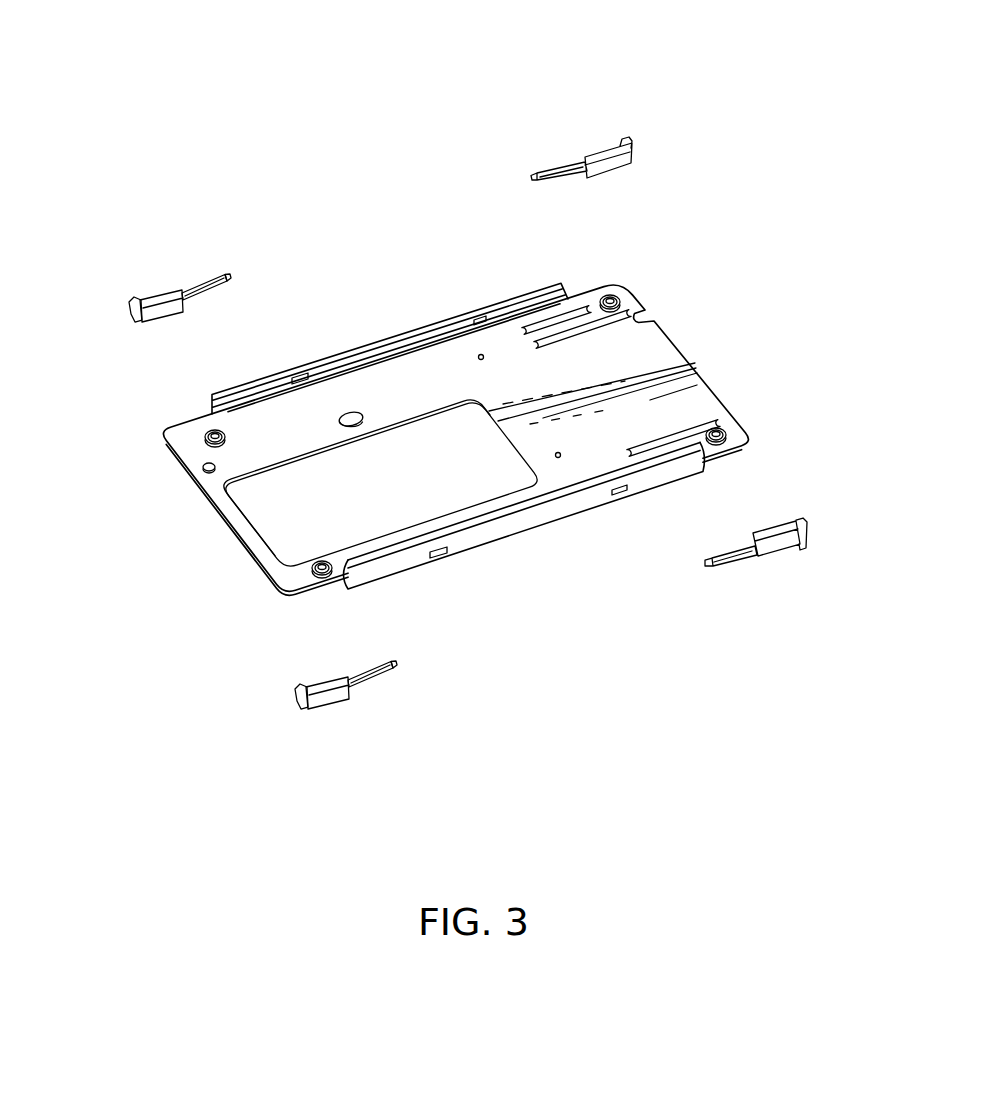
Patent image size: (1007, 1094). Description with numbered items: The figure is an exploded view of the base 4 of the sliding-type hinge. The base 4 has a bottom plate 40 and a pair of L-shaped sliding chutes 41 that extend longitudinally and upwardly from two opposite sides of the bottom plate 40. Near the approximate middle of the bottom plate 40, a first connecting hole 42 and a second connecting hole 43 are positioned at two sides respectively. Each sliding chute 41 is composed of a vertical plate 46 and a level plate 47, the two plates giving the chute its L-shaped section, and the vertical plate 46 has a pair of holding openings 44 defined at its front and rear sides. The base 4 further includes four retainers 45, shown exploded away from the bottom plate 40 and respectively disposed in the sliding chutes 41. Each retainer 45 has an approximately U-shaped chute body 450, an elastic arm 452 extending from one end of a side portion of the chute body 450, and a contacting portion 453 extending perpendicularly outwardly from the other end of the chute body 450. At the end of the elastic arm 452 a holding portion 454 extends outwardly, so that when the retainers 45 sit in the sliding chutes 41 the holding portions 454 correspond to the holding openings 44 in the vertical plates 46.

The base 4 is at (190, 54).
The bottom plate 40 is at (650, 357).
The sliding chute 41 is at (211, 402).
The first connecting hole 42 is at (479, 356).
The second connecting hole 43 is at (558, 458).
The holding opening 44 is at (301, 378).
The retainer 45 is at (417, 417).
The chute body 450 is at (140, 320).
The elastic arm 452 is at (210, 291).
The contacting portion 453 is at (130, 308).
The holding portion 454 is at (372, 465).
The vertical plate 46 is at (524, 520).
The level plate 47 is at (463, 540).